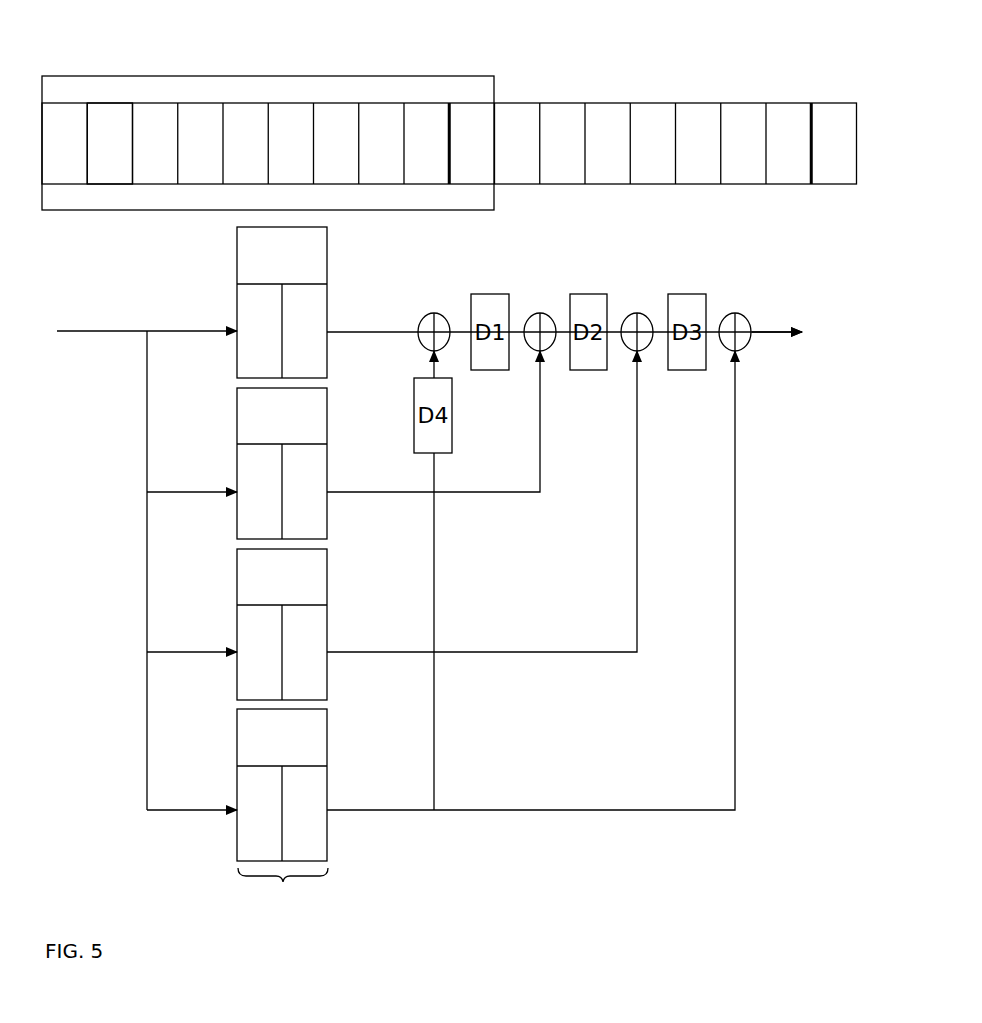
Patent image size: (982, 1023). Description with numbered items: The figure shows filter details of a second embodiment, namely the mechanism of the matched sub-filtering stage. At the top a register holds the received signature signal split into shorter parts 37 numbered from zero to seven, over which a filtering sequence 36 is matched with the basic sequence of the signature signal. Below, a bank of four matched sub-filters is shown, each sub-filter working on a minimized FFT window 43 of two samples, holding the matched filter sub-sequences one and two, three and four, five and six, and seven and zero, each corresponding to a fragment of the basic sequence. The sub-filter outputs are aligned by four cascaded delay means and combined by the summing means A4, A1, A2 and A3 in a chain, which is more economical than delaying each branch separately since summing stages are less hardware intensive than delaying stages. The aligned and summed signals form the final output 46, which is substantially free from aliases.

The filtering sequence 36 is at (387, 75).
The parts of the basic sequence 37 is at (102, 107).
The FFT window 43 is at (292, 893).
The final output 46 is at (811, 310).
The summing means A1 is at (542, 307).
The summing means A2 is at (642, 307).
The summing means A3 is at (742, 307).
The summing means A4 is at (441, 307).